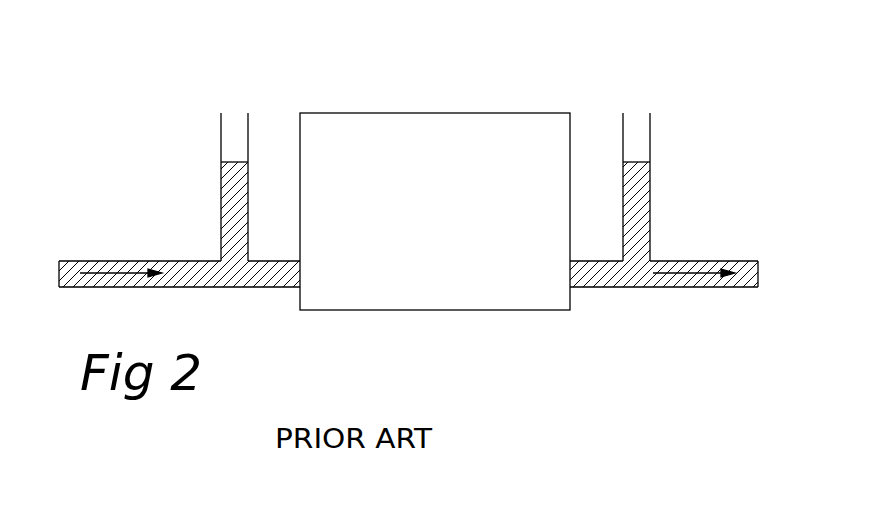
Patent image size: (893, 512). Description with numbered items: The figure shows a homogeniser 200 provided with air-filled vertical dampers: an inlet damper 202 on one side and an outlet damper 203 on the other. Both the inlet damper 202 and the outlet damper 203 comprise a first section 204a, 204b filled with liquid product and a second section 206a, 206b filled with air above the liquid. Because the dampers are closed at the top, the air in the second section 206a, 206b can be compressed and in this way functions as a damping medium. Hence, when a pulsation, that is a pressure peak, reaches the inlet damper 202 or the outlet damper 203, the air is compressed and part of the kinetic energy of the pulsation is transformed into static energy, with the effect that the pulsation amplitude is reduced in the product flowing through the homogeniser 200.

The homogeniser 200 is at (402, 133).
The inlet damper 202 is at (226, 80).
The outlet damper 203 is at (618, 87).
The first section 204a is at (221, 220).
The first section 204b is at (650, 210).
The second section 206a is at (232, 137).
The second section 206b is at (635, 137).